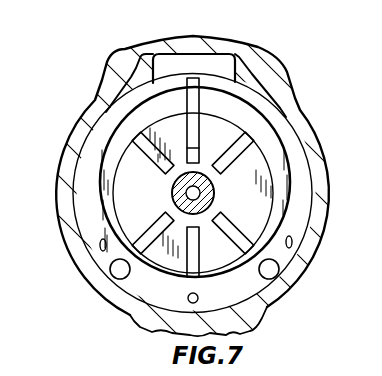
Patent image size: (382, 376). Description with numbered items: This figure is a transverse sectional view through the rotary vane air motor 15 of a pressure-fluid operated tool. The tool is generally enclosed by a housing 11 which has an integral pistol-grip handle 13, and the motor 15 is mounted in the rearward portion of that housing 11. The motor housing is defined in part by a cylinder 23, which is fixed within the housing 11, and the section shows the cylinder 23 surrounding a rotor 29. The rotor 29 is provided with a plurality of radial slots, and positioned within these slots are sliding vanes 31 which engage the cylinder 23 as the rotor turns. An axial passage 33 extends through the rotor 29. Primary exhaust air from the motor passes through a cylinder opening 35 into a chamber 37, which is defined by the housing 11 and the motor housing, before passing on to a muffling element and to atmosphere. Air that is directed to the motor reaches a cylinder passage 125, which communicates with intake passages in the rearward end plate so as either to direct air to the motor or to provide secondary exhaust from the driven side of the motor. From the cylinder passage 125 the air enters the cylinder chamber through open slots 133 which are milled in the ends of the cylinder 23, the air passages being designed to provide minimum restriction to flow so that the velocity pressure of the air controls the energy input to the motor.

The housing 11 is at (303, 110).
The pistol-grip handle 13 is at (248, 330).
The rotary vane air motor 15 is at (311, 157).
The cylinder 23 is at (62, 173).
The rotor 29 is at (213, 133).
The sliding vanes 31 is at (148, 221).
The axial passage 33 is at (194, 190).
The cylinder opening 35 is at (190, 80).
The chamber 37 is at (177, 62).
The cylinder passages 125 is at (112, 274).
The open slots 133 is at (100, 244).